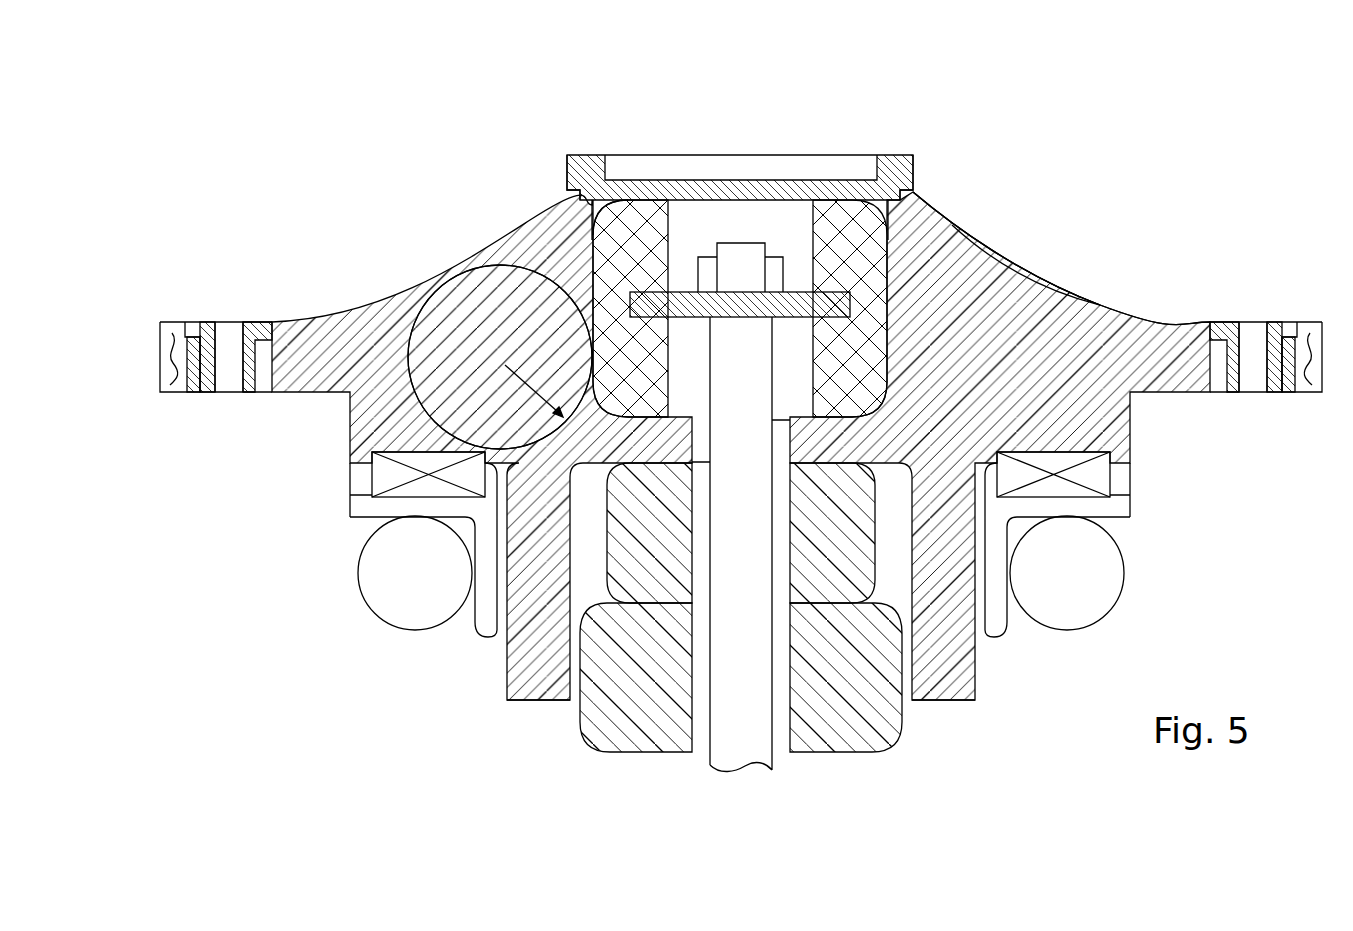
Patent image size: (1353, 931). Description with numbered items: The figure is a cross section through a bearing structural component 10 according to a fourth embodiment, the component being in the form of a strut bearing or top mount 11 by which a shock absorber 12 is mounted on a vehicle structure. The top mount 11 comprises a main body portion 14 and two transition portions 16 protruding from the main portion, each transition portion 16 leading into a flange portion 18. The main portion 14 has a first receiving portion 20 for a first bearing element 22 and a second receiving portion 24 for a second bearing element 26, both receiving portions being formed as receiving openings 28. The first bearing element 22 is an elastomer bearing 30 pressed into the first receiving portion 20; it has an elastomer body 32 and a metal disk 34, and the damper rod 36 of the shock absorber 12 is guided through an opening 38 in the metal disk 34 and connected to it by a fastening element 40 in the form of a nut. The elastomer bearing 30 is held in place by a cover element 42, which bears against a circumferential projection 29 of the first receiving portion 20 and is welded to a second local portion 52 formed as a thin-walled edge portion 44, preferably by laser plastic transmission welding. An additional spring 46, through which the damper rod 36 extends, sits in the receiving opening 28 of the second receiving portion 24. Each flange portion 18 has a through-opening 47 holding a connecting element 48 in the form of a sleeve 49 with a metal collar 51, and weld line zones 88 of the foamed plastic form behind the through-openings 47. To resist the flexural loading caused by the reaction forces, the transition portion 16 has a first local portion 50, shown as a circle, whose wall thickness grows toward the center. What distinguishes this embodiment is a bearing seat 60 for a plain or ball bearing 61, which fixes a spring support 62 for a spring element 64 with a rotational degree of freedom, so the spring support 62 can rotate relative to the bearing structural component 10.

The bearing structural component 10 is at (990, 212).
The top mount 11 is at (1008, 245).
The shock absorber 12 is at (688, 758).
The main body portion 14 is at (837, 443).
The transition portion 16 is at (990, 313).
The flange portion 18 is at (1170, 343).
The first receiving portion 20 is at (875, 188).
The first bearing element 22 is at (880, 268).
The second receiving portion 24 is at (912, 695).
The second bearing element 26 is at (840, 720).
The receiving opening 28 is at (707, 216).
The circumferential projection 29 is at (590, 207).
The elastomer bearing 30 is at (653, 233).
The elastomer body 32 is at (813, 237).
The metal disk 34 is at (850, 313).
The damper rod 36 is at (730, 522).
The opening 38 is at (735, 243).
The fastening element 40 is at (698, 278).
The cover element 42 is at (657, 233).
The edge portion 44 is at (913, 197).
The additional spring 46 is at (625, 705).
The through-opening 47 is at (262, 360).
The connecting element 48 is at (222, 390).
The sleeve 49 is at (218, 345).
The first local portion 50 is at (440, 397).
The collar 51 is at (178, 322).
The second local portion 52 is at (562, 195).
The bearing seat 60 is at (372, 452).
The plain or ball bearing 61 is at (378, 488).
The spring support 62 is at (1083, 507).
The spring element 64 is at (1043, 597).
The weld line zone 88 is at (185, 383).